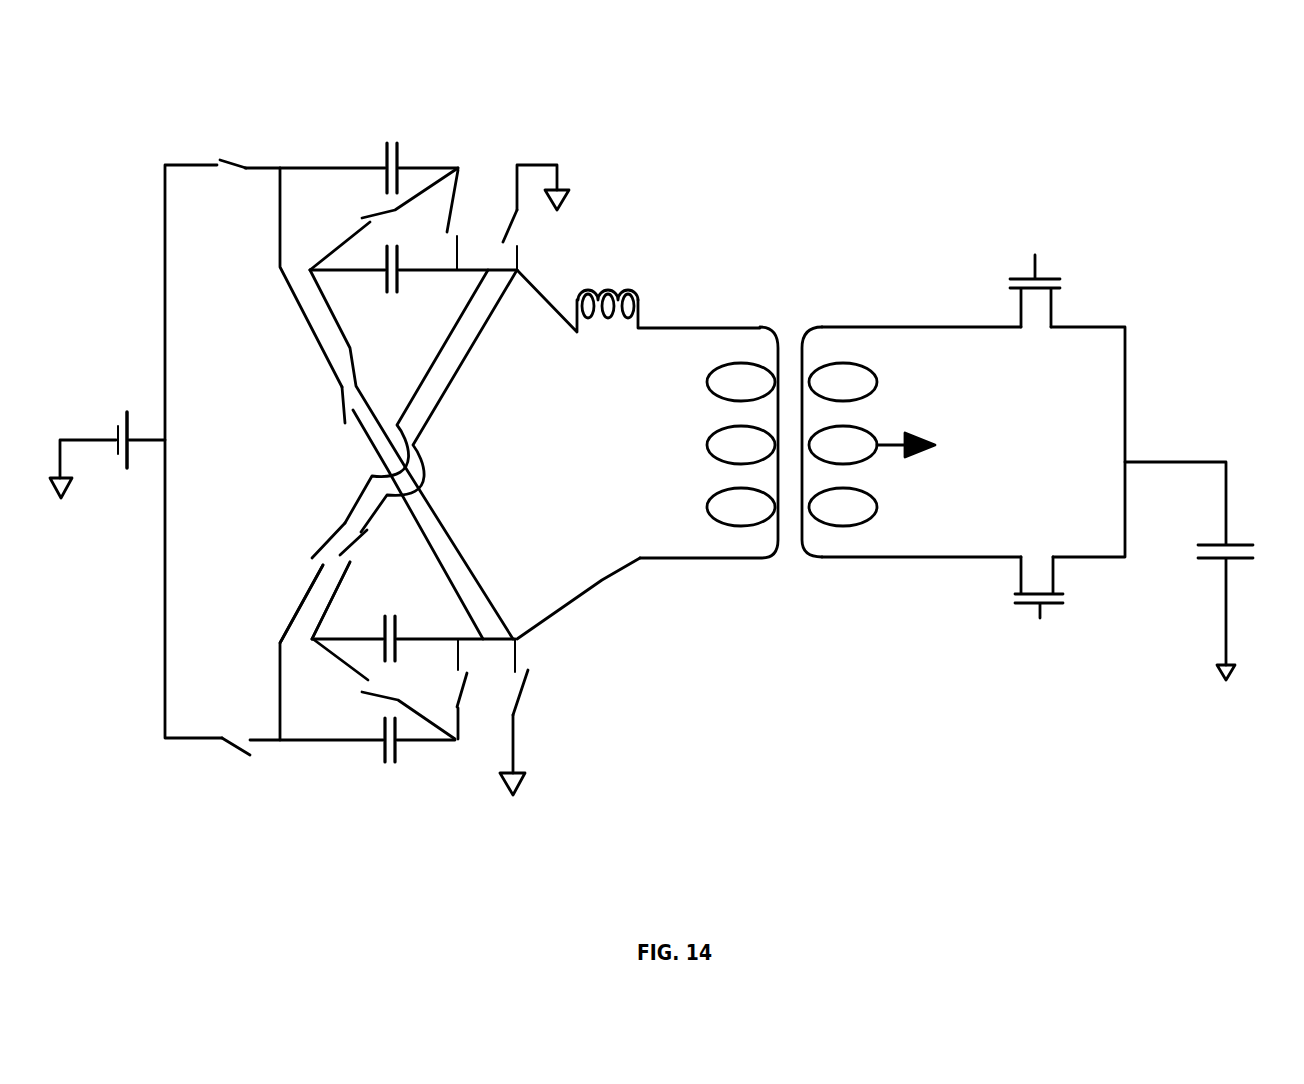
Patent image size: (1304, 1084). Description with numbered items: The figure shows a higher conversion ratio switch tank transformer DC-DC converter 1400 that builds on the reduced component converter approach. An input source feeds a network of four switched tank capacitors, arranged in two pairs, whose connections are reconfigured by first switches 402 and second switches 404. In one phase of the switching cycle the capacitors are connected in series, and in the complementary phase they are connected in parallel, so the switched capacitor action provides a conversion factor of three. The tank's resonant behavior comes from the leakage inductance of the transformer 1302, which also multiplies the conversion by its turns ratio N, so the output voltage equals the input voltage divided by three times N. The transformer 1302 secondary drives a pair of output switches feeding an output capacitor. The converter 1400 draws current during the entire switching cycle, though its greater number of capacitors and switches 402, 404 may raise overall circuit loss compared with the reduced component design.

The higher conversion ratio switch tank transformer DC-DC converter 1400 is at (852, 98).
The transformer 1302 is at (796, 574).
The first switches 402 is at (222, 160).
The second switches 404 is at (507, 215).